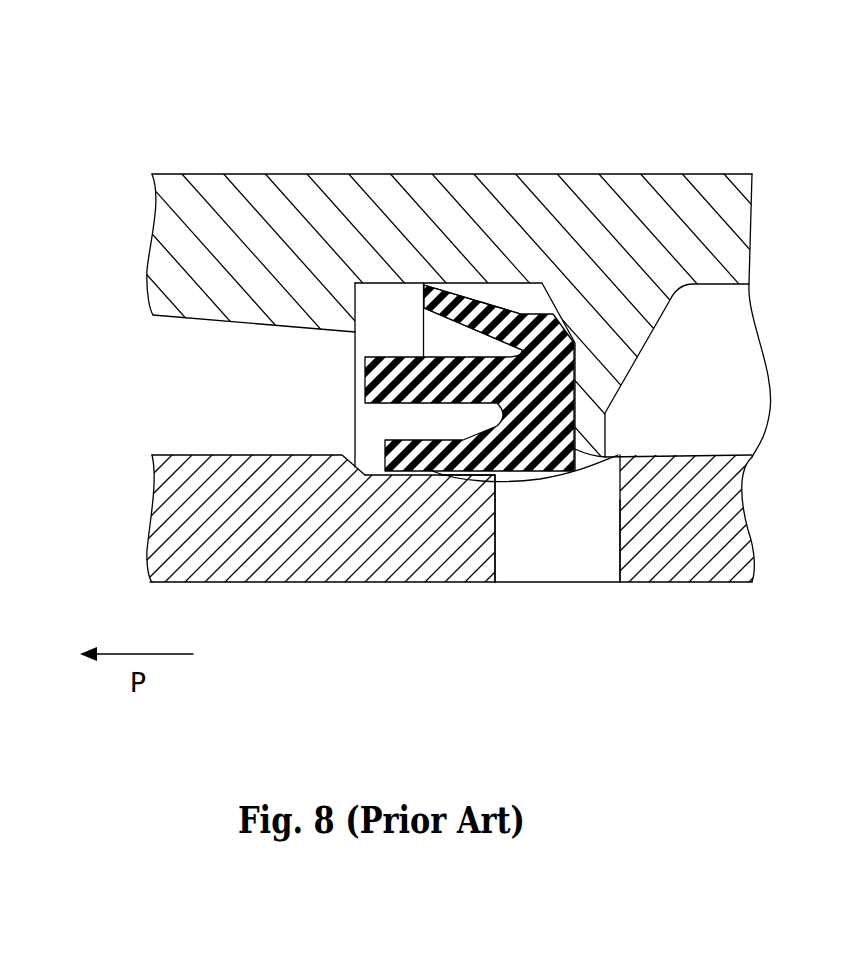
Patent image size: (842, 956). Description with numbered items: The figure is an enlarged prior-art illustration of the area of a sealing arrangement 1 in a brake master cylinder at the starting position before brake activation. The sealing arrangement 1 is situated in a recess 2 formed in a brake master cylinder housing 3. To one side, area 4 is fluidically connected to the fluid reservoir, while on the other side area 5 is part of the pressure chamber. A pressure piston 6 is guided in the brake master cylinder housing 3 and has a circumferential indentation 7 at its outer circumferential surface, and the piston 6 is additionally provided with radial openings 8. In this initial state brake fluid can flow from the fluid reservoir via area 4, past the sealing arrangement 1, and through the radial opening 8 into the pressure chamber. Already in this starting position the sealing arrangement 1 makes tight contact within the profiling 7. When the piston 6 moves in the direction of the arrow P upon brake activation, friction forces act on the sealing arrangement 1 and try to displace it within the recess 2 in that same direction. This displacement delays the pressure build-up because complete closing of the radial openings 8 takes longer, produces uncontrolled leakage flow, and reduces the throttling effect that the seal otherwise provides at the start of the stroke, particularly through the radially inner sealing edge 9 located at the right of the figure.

The sealing arrangement 1 is at (388, 357).
The recess 2 is at (506, 283).
The brake master cylinder housing 3 is at (388, 357).
The area 4 is at (703, 383).
The area 5 is at (273, 380).
The pressure piston 6 is at (727, 529).
The circumferential indentation 7 is at (482, 483).
The radial openings 8 is at (555, 537).
The radially inner sealing edge 9 is at (567, 470).